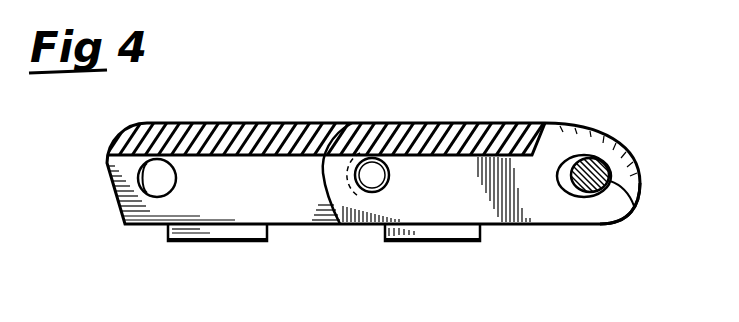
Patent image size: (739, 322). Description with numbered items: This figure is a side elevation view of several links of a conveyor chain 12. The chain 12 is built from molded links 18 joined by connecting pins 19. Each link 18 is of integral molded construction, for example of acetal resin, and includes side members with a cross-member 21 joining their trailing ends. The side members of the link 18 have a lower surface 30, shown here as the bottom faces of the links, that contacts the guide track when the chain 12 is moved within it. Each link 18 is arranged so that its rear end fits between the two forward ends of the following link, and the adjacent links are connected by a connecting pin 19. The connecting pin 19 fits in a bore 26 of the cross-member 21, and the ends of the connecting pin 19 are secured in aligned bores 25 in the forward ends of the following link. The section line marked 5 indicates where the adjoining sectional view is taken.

The section line 5- 5 is at (362, 82).
The conveyor chain 12 is at (546, 115).
The molded link 18 is at (470, 123).
The connecting pin 19 is at (386, 172).
The cross-member 21 is at (615, 217).
The aligned bore 25 is at (143, 177).
The bore 26 is at (572, 193).
The lower surface 30 is at (215, 243).